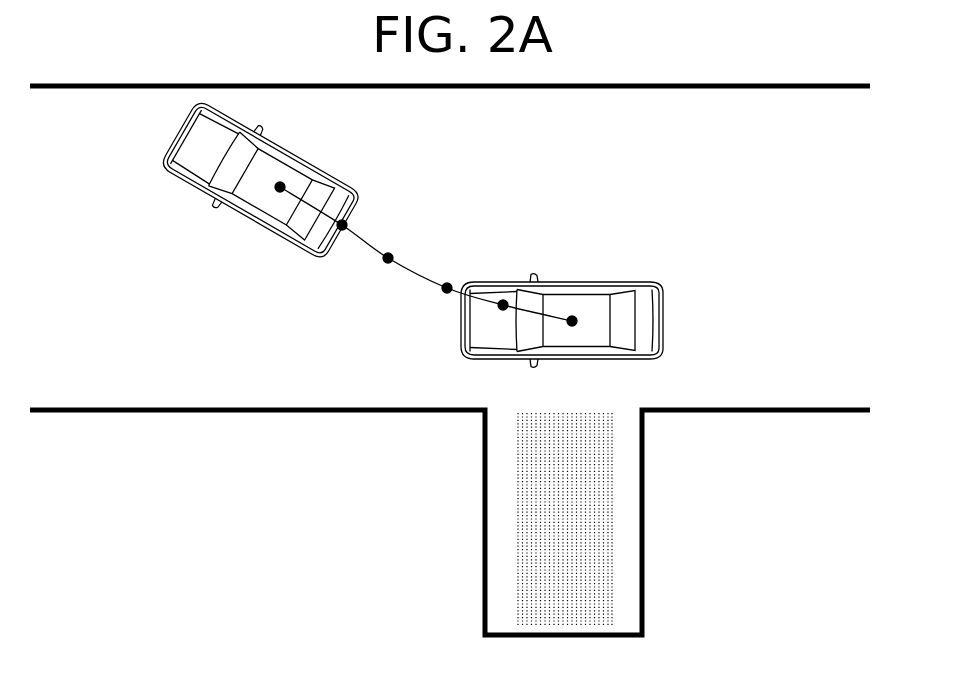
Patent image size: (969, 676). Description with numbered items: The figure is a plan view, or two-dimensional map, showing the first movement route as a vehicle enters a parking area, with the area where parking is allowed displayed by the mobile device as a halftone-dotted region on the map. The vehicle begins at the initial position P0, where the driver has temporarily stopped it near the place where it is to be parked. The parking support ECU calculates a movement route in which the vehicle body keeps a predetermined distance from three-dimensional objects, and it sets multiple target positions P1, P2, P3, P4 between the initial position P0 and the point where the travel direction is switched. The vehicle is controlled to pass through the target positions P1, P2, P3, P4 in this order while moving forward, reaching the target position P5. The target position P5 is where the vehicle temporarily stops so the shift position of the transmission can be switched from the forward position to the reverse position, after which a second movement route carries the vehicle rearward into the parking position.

The initial position P0 is at (573, 318).
The target position P1 is at (504, 302).
The target position P2 is at (448, 285).
The target position P3 is at (389, 255).
The target position P4 is at (343, 222).
The target position P5 is at (281, 184).